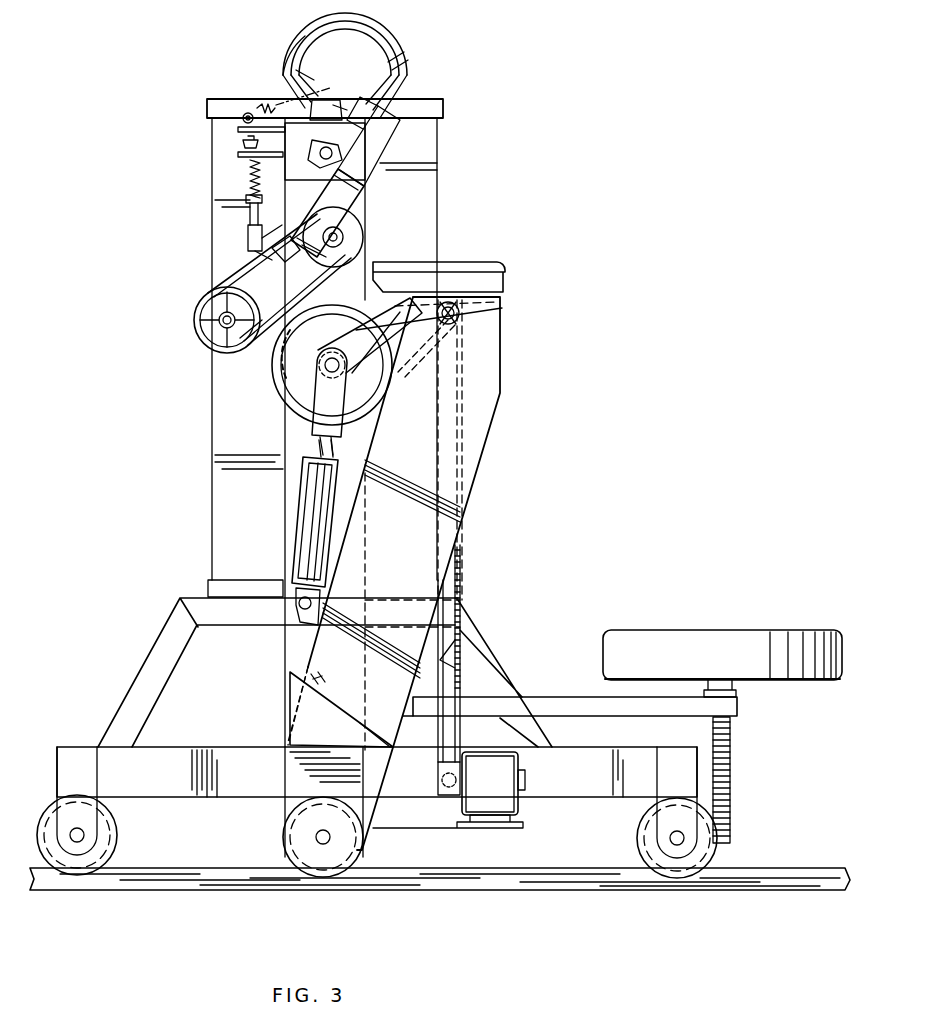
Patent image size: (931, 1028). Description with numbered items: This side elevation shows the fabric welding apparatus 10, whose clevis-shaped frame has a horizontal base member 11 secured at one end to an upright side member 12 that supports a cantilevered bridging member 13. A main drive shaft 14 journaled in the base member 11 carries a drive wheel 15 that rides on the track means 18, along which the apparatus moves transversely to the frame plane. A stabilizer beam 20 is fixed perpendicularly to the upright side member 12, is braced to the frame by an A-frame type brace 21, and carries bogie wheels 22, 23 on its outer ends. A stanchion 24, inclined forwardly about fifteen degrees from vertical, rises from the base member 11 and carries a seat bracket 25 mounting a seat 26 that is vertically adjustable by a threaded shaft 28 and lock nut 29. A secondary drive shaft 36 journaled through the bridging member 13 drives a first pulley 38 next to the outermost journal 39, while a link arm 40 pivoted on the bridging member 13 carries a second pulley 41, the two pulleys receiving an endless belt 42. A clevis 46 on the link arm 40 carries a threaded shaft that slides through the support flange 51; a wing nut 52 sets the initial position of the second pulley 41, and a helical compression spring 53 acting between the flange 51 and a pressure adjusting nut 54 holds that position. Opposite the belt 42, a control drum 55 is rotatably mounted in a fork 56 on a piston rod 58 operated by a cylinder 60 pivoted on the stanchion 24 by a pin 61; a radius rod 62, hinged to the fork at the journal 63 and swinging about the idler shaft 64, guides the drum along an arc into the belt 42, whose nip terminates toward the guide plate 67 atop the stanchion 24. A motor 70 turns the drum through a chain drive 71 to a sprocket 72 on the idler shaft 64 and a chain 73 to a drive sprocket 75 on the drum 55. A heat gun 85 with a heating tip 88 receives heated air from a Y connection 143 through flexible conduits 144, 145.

The welding apparatus 10 is at (456, 178).
The base member 11 is at (290, 758).
The upright side member 12 is at (285, 470).
The bridging member 13 is at (362, 150).
The main drive shaft 14 is at (323, 830).
The drive wheel 15 is at (285, 856).
The track means 18 is at (400, 878).
The stabilizer beam 20 is at (162, 752).
The A-frame type brace 21 is at (140, 677).
The bogie wheel 22 is at (650, 840).
The bogie wheel 23 is at (100, 832).
The stanchion 24 is at (470, 452).
The seat bracket 25 is at (582, 697).
The seat 26 is at (700, 628).
The threaded shaft 28 is at (732, 742).
The lock nut 29 is at (738, 690).
The secondary drive shaft 36 is at (345, 237).
The first pulley 38 is at (360, 223).
The outermost journal 39 is at (358, 196).
The link arm 40 is at (255, 253).
The second pulley 41 is at (210, 332).
The endless belt 42 is at (216, 290).
The clevis 46 is at (246, 237).
The support flange 51 is at (238, 155).
The wing nut 52 is at (241, 143).
The helical compression spring 53 is at (246, 178).
The pressure adjusting nut 54 is at (246, 200).
The control drum 55 is at (283, 388).
The fork 56 is at (318, 415).
The piston rod 58 is at (330, 447).
The cylinder 60 is at (298, 522).
The pin 61 is at (298, 603).
The radius rod 62 is at (340, 368).
The journal 63 is at (338, 372).
The idler shaft 64 is at (460, 320).
The guide plate 67 is at (415, 263).
The motor 70 is at (505, 800).
The chain drive 71 is at (460, 568).
The sprocket 72 is at (500, 300).
The chain 73 is at (385, 305).
The drive sprocket 75 is at (298, 362).
The heat gun 85 is at (398, 124).
The heating tip 88 is at (288, 260).
The Y connection 143 is at (320, 92).
The flexible conduit 144 is at (314, 28).
The flexible conduit 145 is at (350, 62).